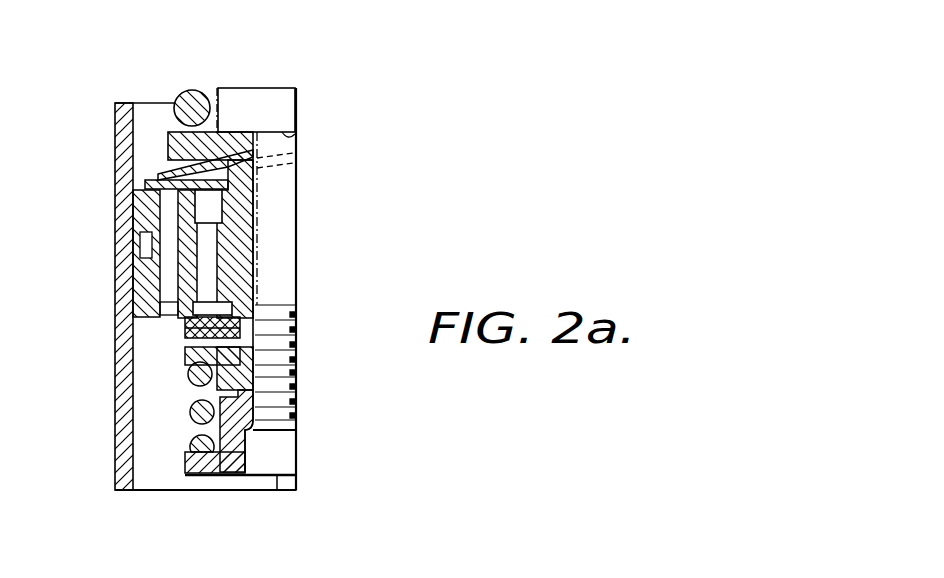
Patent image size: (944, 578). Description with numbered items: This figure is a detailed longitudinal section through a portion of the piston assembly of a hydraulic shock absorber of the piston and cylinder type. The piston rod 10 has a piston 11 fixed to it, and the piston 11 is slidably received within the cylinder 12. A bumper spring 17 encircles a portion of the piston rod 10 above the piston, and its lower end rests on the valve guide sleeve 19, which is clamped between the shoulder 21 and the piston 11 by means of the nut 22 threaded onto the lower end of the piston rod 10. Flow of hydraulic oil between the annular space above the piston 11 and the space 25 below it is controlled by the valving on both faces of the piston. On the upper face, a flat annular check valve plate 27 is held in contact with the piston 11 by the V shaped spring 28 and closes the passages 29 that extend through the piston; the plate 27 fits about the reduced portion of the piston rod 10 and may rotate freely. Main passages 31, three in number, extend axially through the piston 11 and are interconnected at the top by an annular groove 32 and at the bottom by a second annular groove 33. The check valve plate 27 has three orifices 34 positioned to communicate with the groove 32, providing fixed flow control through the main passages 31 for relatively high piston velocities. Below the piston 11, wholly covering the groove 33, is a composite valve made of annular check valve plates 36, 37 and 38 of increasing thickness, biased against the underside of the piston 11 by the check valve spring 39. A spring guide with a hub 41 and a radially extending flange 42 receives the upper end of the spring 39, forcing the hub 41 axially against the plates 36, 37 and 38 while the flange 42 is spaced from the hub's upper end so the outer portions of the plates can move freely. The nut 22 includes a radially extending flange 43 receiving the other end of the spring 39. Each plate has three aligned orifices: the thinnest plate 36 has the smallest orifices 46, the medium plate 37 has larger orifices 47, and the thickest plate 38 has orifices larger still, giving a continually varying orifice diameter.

The piston rod 10 is at (280, 92).
The piston 11 is at (255, 265).
The cylinder 12 is at (115, 475).
The bumper spring 17 is at (186, 92).
The valve guide sleeve 19 is at (257, 155).
The shoulder 21 is at (283, 136).
The nut 22 is at (280, 478).
The space below the piston 25 is at (186, 480).
The annular check valve plate 27 is at (150, 184).
The V shaped spring 28 is at (168, 178).
The passages 29 is at (160, 216).
The main passages 31 is at (217, 240).
The annular groove 32 is at (200, 210).
The second annular groove 33 is at (225, 305).
The orifices 34 is at (210, 187).
The annular check valve plate 36 is at (185, 337).
The annular check valve plate 37 is at (185, 329).
The annular check valve plate 38 is at (185, 322).
The check valve spring 39 is at (193, 418).
The hub 41 is at (237, 392).
The radially extending flange 42 is at (195, 362).
The radially extending flange 43 is at (186, 462).
The orifices 46 is at (240, 350).
The orifices 47 is at (293, 315).